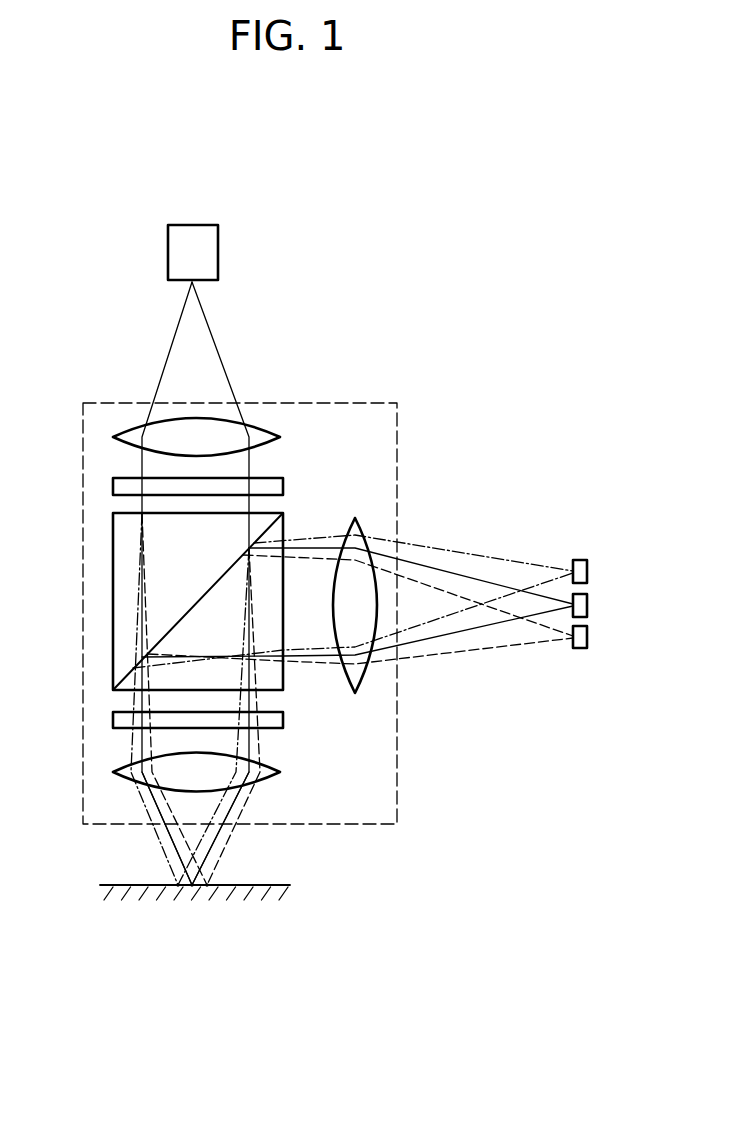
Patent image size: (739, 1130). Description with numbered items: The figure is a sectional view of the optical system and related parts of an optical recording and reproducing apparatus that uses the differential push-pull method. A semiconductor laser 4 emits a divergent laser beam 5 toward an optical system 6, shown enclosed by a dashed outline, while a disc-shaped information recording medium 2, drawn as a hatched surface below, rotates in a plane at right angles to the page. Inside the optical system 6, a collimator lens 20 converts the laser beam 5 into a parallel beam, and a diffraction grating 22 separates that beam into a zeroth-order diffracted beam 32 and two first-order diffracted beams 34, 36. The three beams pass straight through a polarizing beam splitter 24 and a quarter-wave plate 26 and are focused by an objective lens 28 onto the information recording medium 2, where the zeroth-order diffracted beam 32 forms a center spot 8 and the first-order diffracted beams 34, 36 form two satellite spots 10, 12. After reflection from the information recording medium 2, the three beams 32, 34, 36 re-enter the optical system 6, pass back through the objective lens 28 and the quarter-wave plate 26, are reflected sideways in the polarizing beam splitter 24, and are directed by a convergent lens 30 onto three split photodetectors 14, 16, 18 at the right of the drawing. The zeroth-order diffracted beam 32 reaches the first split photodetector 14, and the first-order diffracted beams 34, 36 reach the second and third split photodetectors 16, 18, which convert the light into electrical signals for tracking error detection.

The information recording medium 2 is at (290, 889).
The semiconductor laser 4 is at (218, 242).
The laser beam 5 is at (173, 337).
The optical system 6 is at (83, 405).
The center spot 8 is at (192, 888).
The satellite spot 10 is at (207, 888).
The satellite spot 12 is at (178, 888).
The first split photodetector 14 is at (587, 605).
The second split photodetector 16 is at (587, 636).
The third split photodetector 18 is at (587, 571).
The collimator lens 20 is at (280, 437).
The diffraction grating 22 is at (283, 478).
The polarizing beam splitter 24 is at (113, 547).
The quarter-wave plate 26 is at (283, 720).
The objective lens 28 is at (280, 775).
The convergent lens 30 is at (360, 690).
The zeroth-order diffracted beam 32 is at (140, 700).
The first-order diffracted beam 34 is at (127, 750).
The first-order diffracted beam 36 is at (122, 758).